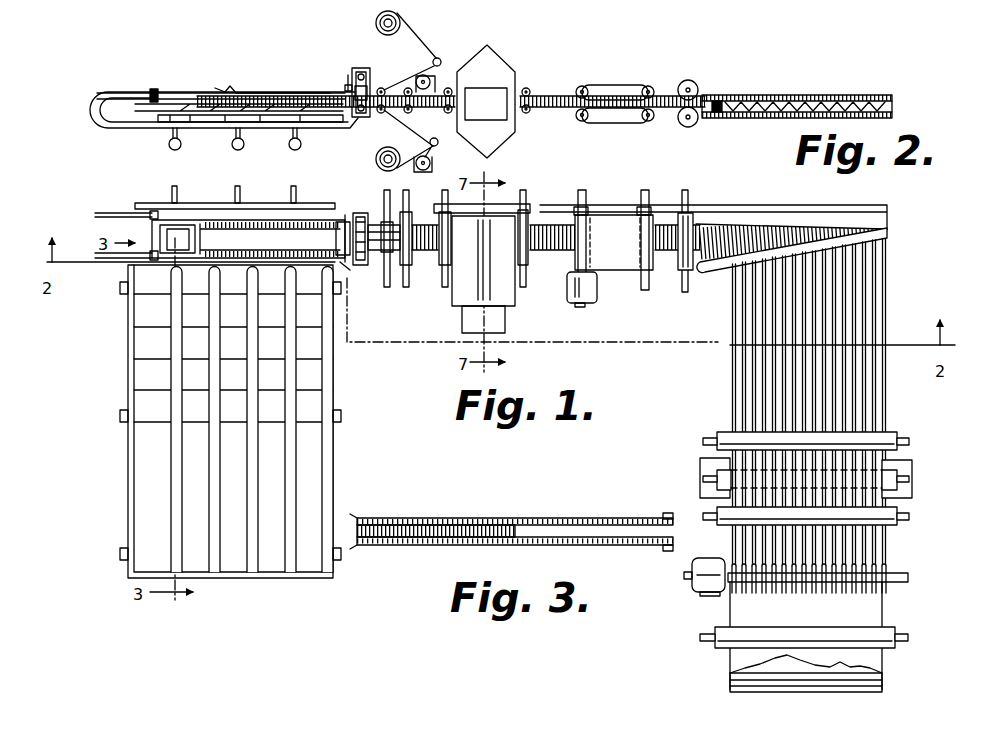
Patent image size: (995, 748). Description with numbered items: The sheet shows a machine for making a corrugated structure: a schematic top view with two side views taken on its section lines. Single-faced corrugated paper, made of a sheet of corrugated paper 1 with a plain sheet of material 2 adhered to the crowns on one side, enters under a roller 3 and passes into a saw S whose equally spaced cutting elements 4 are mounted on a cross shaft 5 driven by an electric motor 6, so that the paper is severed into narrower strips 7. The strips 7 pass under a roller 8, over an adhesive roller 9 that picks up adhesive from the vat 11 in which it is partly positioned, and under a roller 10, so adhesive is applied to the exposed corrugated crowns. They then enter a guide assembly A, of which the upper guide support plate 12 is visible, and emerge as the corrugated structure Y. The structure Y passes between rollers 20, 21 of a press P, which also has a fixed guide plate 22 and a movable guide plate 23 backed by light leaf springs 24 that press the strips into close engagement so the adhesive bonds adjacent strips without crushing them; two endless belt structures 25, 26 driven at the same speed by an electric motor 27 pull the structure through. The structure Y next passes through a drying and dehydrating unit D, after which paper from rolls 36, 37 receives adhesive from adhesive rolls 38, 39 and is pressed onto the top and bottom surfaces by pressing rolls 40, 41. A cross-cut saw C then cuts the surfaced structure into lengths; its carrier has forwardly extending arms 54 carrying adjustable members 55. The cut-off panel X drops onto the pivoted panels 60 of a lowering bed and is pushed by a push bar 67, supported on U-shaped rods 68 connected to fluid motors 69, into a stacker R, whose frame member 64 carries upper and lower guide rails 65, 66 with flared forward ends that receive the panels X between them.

In FIG. 1, the sheet of corrugated paper 1 is at (850, 690).
In FIG. 1, the plain sheet of material 2 is at (738, 667).
In FIG. 1, the roller 3 is at (886, 640).
In FIG. 1, the cutting elements 4 is at (876, 568).
In FIG. 1, the cross shaft 5 is at (907, 578).
In FIG. 1, the electric motor 6 is at (700, 592).
In FIG. 1, the narrower strips 7 is at (736, 411).
In FIG. 1, the roller 8 is at (898, 515).
In FIG. 1, the adhesive roller 9 is at (893, 484).
In FIG. 1, the roller 10 is at (898, 440).
In FIG. 1, the vat 11 is at (902, 466).
In FIG. 1, the upper guide support plate 12 is at (723, 258).
In FIG. 2, the roller 20 is at (688, 80).
In FIG. 1, the roller 20 is at (690, 272).
In FIG. 2, the roller 21 is at (697, 126).
In FIG. 1, the fixed guide plate 22 is at (663, 258).
In FIG. 1, the movable guide plate 23 is at (662, 220).
In FIG. 1, the leaf springs 24 is at (757, 220).
In FIG. 2, the endless belt structure 25 is at (621, 84).
In FIG. 1, the endless belt structure 25 is at (610, 256).
In FIG. 2, the endless belt structure 26 is at (613, 125).
In FIG. 1, the electric motor 27 is at (592, 292).
In FIG. 2, the roll 36 is at (400, 16).
In FIG. 1, the roll 36 is at (409, 253).
In FIG. 2, the roll 37 is at (385, 168).
In FIG. 2, the adhesive roll 38 is at (418, 78).
In FIG. 2, the adhesive roll 39 is at (426, 172).
In FIG. 2, the pressing roll 40 is at (380, 88).
In FIG. 2, the pressing roll 41 is at (380, 114).
In FIG. 2, the forwardly extending arms 54 is at (130, 131).
In FIG. 2, the adjustable member 55 is at (167, 94).
In FIG. 1, the adjustable member 55 is at (113, 212).
In FIG. 2, the pivoted panels 60 is at (243, 102).
In FIG. 1, the frame member 64 is at (131, 580).
In FIG. 1, the upper guide rail 65 is at (287, 540).
In FIG. 3, the upper guide rail 65 is at (438, 520).
In FIG. 3, the lower guide rail 66 is at (432, 538).
In FIG. 2, the push bar 67 is at (299, 150).
In FIG. 1, the U-shaped rods 68 is at (300, 203).
In FIG. 2, the fluid motors 69 is at (241, 149).
In FIG. 2, the guide assembly A is at (862, 92).
In FIG. 1, the guide assembly A is at (892, 236).
In FIG. 2, the cross-cut saw C is at (357, 65).
In FIG. 2, the drying and dehydrating unit D is at (500, 133).
In FIG. 1, the drying and dehydrating unit D is at (500, 290).
In FIG. 1, the press P is at (675, 207).
In FIG. 1, the stacker R is at (126, 353).
In FIG. 1, the saw S is at (884, 586).
In FIG. 2, the panel X is at (278, 93).
In FIG. 1, the panel X is at (225, 237).
In FIG. 3, the panel X is at (398, 520).
In FIG. 2, the corrugated structure Y is at (552, 95).
In FIG. 1, the corrugated structure Y is at (795, 225).